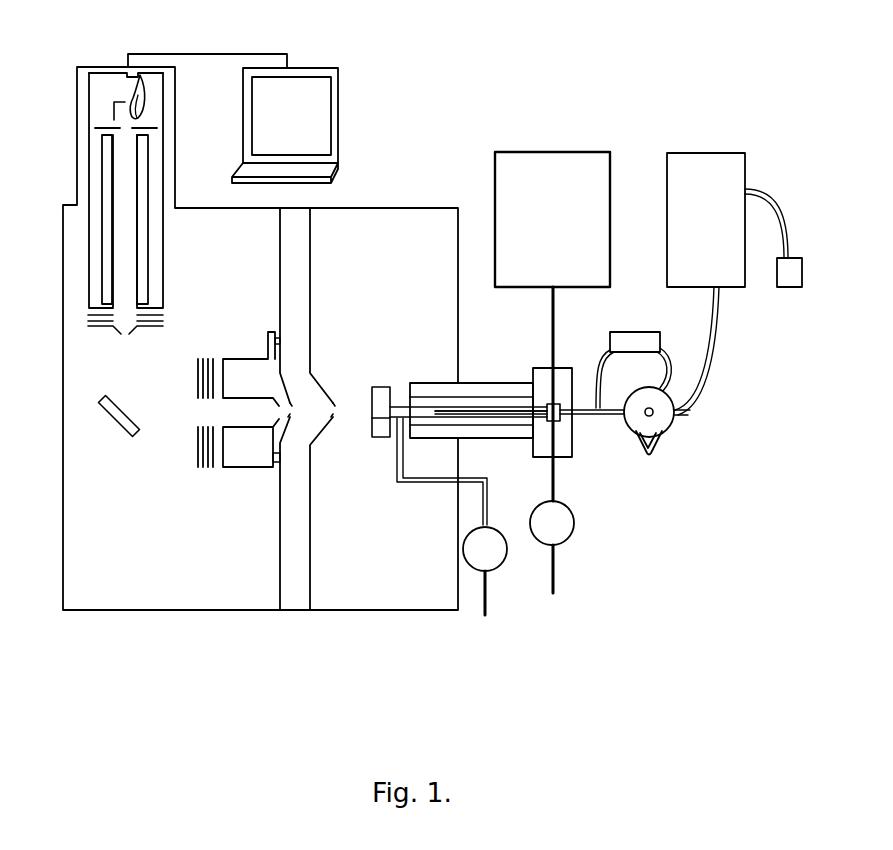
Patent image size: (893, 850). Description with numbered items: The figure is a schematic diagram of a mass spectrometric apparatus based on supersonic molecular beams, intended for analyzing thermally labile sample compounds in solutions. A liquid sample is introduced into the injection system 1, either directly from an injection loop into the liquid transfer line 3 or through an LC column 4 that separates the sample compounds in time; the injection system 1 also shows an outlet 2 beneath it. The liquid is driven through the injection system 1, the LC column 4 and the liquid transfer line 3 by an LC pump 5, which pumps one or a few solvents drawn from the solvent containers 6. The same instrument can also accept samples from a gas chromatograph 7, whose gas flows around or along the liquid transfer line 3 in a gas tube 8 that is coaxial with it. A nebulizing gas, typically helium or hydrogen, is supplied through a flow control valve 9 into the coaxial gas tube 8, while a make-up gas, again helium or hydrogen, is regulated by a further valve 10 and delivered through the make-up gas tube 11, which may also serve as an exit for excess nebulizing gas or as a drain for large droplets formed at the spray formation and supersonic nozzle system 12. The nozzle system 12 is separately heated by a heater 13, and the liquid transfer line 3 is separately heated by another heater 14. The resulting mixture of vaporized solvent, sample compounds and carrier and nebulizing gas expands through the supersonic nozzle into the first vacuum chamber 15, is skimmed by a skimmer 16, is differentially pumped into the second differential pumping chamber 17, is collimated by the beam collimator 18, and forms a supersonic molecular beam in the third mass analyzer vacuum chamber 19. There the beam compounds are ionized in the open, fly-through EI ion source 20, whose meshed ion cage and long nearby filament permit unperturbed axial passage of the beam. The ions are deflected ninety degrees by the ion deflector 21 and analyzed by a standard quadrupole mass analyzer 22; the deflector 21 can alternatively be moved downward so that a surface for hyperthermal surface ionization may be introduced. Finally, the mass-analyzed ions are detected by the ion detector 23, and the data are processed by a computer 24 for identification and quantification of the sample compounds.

The injection system 1 is at (665, 417).
The outlet 2 is at (645, 457).
The liquid transfer line 3 is at (581, 420).
The LC column 4 is at (623, 332).
The LC pump 5 is at (727, 270).
The solvent containers 6 is at (790, 273).
The gas chromatograph 7 is at (557, 165).
The gas tube 8 is at (497, 402).
The flow control valve 9 is at (558, 530).
The valve 10 is at (493, 553).
The make-up gas tube 11 is at (417, 487).
The spray formation and supersonic nozzle system 12 is at (385, 417).
The heater 13 is at (378, 400).
The heater 14 is at (428, 392).
The first vacuum chamber 15 is at (345, 602).
The skimmer 16 is at (323, 430).
The differential pumping chamber 17 is at (295, 592).
The beam collimator 18 is at (290, 422).
The mass analyzer vacuum chamber 19 is at (143, 597).
The fly-through EI ion source 20 is at (255, 458).
The ion deflector 21 is at (113, 423).
The quadrupole mass analyzer 22 is at (95, 243).
The ion detector 23 is at (136, 118).
The computer 24 is at (316, 128).